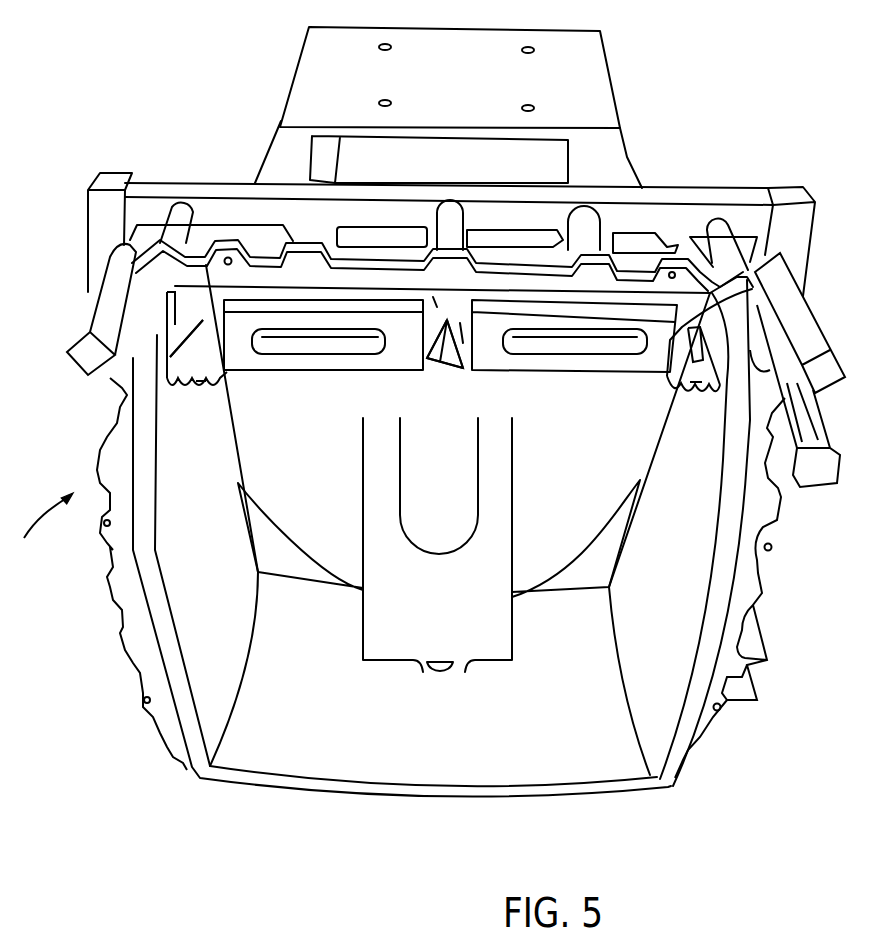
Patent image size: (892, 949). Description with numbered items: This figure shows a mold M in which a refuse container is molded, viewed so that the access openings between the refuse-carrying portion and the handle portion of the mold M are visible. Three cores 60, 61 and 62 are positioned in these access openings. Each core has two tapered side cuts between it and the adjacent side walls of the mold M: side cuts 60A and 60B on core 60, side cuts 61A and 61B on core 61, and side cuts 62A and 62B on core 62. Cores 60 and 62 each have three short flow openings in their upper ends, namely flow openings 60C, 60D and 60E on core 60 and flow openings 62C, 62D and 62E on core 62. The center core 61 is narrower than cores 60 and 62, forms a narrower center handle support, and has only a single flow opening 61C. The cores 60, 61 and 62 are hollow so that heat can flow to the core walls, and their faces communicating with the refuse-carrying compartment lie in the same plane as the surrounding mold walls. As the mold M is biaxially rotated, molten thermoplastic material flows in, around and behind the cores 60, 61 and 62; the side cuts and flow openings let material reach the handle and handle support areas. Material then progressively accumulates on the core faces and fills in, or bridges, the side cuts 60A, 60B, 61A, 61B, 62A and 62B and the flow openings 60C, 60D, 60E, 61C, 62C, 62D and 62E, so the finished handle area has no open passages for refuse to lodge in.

The core 60 is at (170, 303).
The tapered side cut 60A is at (197, 342).
The tapered side cut 60B is at (206, 265).
The flow opening 60C is at (182, 380).
The flow opening 60D is at (202, 380).
The flow opening 60E is at (208, 380).
The core 61 is at (437, 333).
The tapered side cut 61A is at (437, 305).
The tapered side cut 61B is at (462, 343).
The flow opening 61C is at (449, 362).
The core 62 is at (712, 387).
The tapered side cut 62A is at (710, 291).
The tapered side cut 62B is at (703, 372).
The flow opening 62C is at (708, 373).
The flow opening 62D is at (697, 393).
The flow opening 62E is at (680, 390).
The mold M is at (43, 532).